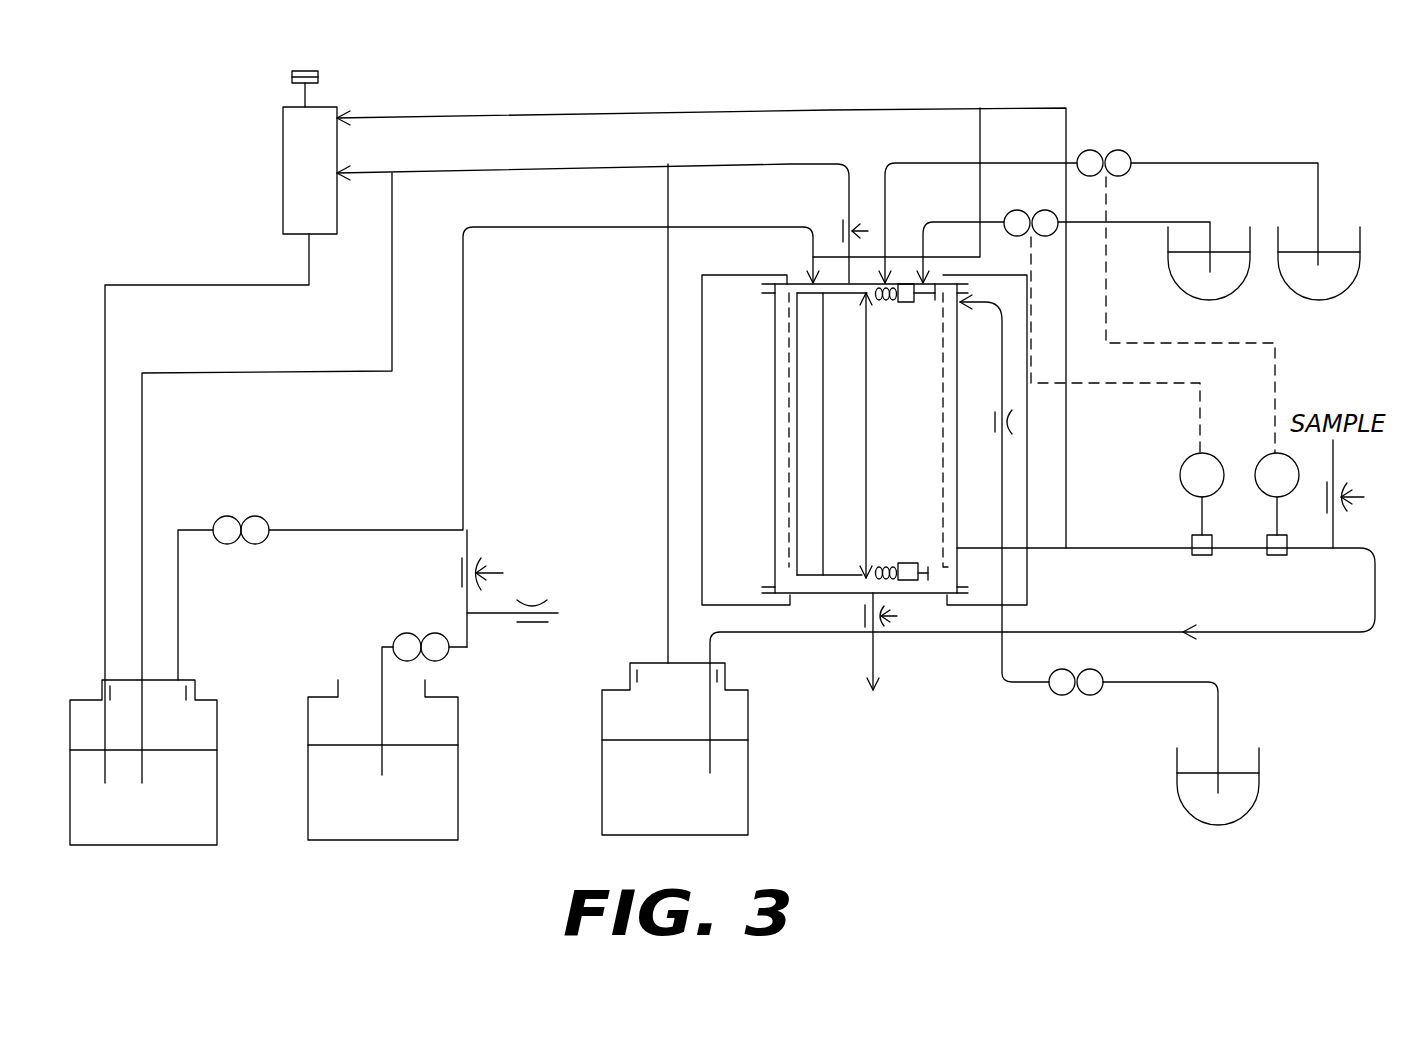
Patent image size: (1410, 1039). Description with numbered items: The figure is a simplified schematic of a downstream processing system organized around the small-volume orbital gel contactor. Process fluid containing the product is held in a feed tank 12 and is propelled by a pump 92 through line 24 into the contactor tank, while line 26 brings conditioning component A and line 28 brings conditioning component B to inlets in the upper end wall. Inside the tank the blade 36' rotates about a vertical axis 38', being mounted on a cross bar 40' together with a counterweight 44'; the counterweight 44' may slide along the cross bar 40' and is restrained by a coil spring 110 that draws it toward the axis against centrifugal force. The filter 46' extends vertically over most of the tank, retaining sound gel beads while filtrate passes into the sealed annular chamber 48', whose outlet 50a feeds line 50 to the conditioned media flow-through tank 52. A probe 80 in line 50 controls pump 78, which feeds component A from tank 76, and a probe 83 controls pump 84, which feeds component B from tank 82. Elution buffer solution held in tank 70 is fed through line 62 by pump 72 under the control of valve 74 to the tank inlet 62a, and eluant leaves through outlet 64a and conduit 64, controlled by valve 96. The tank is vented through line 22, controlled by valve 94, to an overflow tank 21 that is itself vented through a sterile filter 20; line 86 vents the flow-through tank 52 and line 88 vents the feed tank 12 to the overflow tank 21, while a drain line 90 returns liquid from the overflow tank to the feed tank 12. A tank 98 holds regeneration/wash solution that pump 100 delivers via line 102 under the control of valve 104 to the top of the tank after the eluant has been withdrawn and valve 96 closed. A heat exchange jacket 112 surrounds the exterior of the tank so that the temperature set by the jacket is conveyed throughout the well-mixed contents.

The feed tank 12 is at (217, 760).
The sterile filter 20 is at (313, 70).
The overflow tank 21 is at (323, 182).
The vent line 22 is at (462, 170).
The process fluid line 24 is at (573, 227).
The component A line 26 is at (957, 220).
The component B line 28 is at (918, 163).
The blade 36' is at (769, 434).
The vertical axis 38' is at (793, 435).
The cross bar 40' is at (937, 403).
The counterweight 44' is at (918, 432).
The filter 46' is at (752, 430).
The annular chamber 48' is at (833, 430).
The filtrate outlet line 50 is at (1108, 546).
The annular chamber outlet 50a is at (1003, 549).
The conditioned media flow-through tank 52 is at (748, 757).
The elution buffer solution feed line 62 is at (1002, 466).
The elution buffer inlet 62a is at (962, 318).
The eluant outlet conduit 64 is at (873, 665).
The eluant outlet 64a is at (870, 595).
The elution buffer tank 70 is at (1177, 783).
The elution buffer pump 72 is at (1095, 675).
The elution buffer valve 74 is at (1017, 406).
The component A tank 76 is at (1361, 262).
The component A pump 78 is at (1106, 150).
The probe 80 is at (1266, 457).
The component B tank 82 is at (1168, 260).
The probe 83 is at (1187, 458).
The component B pump 84 is at (1032, 210).
The vent line 86 is at (668, 415).
The vent line 88 is at (267, 373).
The drain line 90 is at (105, 440).
The process fluid pump 92 is at (240, 515).
The vent valve 94 is at (834, 211).
The eluant outlet valve 96 is at (897, 616).
The regeneration/wash solution tank 98 is at (458, 765).
The regeneration/wash pump 100 is at (420, 632).
The regeneration/wash line 102 is at (467, 390).
The regeneration/wash valve 104 is at (491, 560).
The coil spring 110 is at (886, 302).
The heat exchange jacket 112 is at (738, 275).